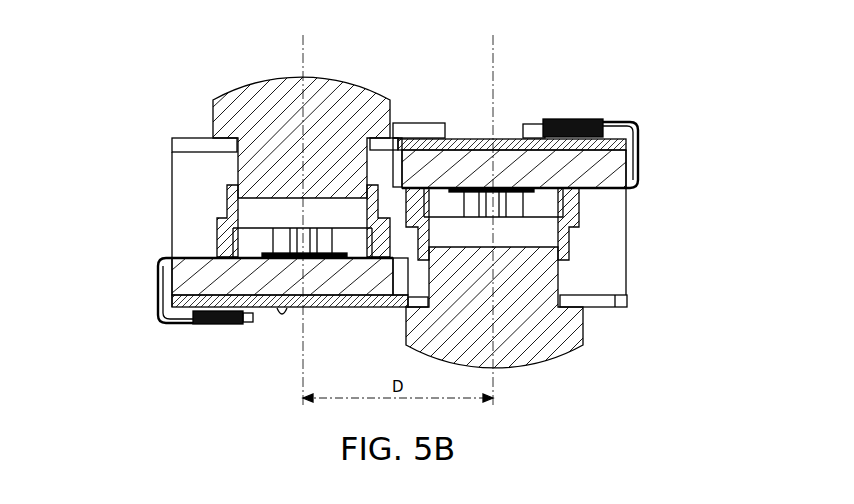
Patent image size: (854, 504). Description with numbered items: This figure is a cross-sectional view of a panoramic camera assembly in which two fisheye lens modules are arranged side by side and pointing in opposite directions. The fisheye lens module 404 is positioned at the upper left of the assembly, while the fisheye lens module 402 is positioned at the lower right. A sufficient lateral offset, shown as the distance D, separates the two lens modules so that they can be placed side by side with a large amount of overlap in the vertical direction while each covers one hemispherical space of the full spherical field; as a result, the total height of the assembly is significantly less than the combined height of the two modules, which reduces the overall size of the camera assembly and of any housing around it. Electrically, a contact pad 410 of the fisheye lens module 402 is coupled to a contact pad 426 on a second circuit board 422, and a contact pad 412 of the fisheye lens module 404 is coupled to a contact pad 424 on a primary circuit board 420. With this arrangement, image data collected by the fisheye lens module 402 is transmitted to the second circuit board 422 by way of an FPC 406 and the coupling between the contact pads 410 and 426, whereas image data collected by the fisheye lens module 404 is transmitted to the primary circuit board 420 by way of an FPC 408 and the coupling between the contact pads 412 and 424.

The fisheye lens module 402 is at (513, 303).
The fisheye lens module 404 is at (213, 103).
The FPC 406 is at (640, 162).
The FPC 408 is at (158, 292).
The contact pad 410 is at (582, 121).
The contact pad 412 is at (207, 325).
The primary circuit board 420 is at (330, 307).
The second circuit board 422 is at (465, 140).
The contact pad 424 is at (195, 311).
The contact pad 426 is at (603, 123).